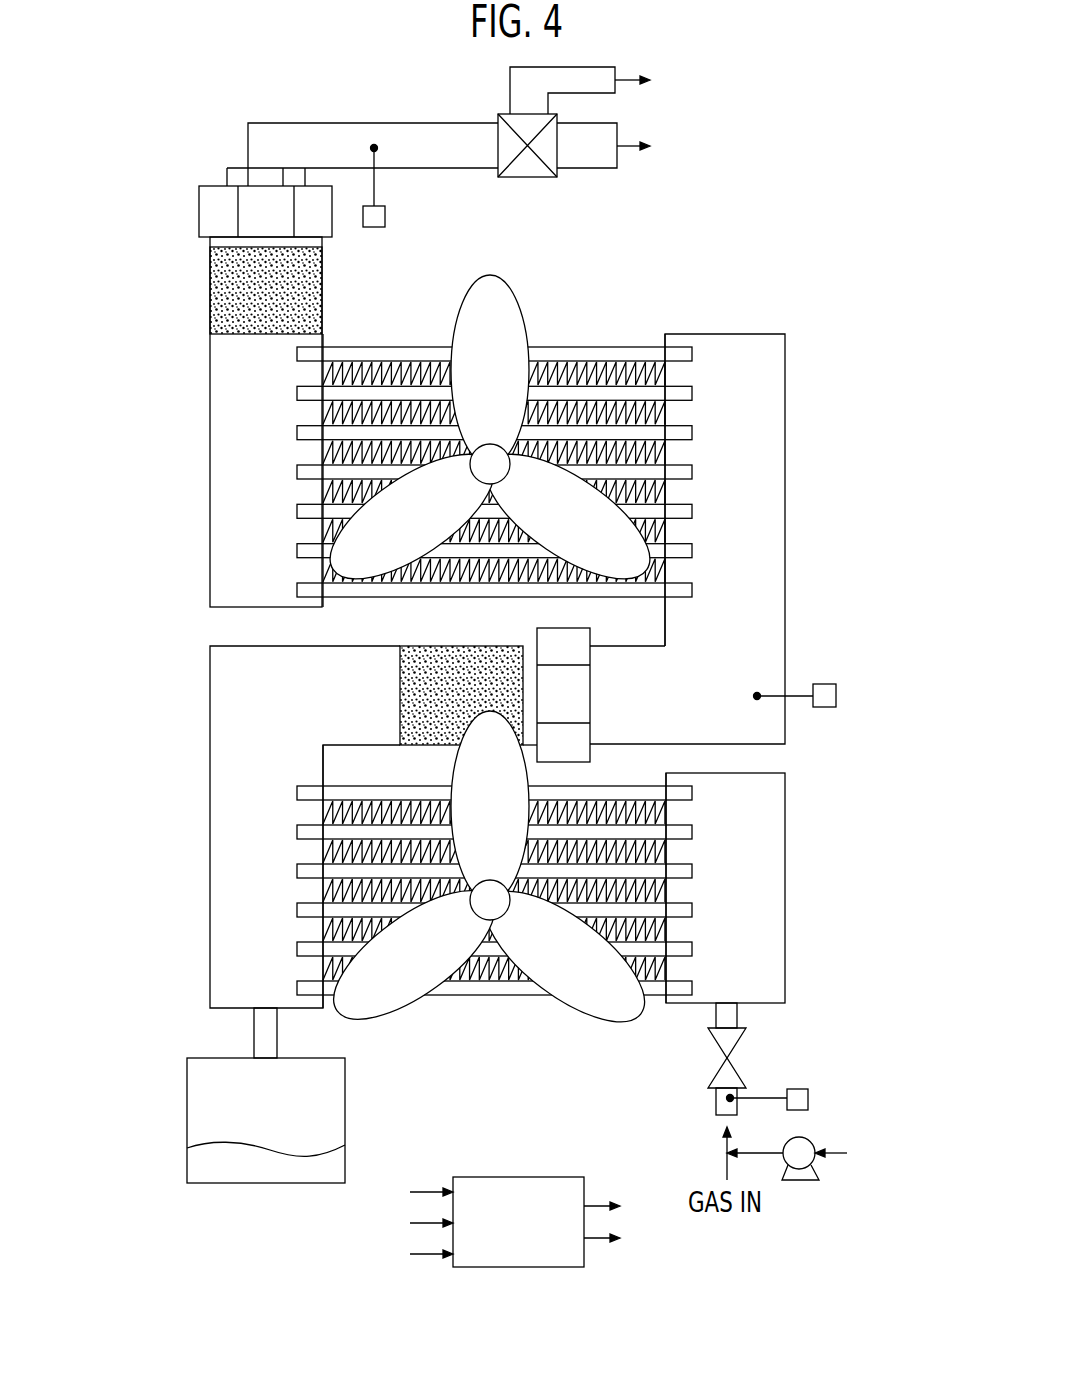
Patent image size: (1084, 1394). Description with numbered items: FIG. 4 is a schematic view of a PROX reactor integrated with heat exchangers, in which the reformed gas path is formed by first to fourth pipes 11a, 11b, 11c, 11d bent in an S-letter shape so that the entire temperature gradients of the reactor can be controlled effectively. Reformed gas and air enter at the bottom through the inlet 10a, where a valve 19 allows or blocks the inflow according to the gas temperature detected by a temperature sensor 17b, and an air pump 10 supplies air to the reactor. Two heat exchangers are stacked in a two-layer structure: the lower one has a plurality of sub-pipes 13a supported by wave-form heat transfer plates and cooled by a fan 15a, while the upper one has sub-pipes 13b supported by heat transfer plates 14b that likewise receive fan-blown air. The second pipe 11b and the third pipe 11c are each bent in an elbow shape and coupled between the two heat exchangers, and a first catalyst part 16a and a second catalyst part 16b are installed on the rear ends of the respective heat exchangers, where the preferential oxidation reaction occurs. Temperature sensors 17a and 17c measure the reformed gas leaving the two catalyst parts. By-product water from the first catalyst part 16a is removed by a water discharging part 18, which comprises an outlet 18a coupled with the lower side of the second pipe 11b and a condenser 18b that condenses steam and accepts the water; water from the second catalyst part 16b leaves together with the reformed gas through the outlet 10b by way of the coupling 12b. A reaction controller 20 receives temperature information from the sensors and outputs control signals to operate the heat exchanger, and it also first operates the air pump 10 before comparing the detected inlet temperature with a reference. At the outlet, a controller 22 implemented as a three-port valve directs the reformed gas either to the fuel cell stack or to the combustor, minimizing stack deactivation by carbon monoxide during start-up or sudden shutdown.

The air pump 10 is at (798, 1182).
The inlet 10a is at (740, 1010).
The outlet 10b is at (313, 130).
The first pipe 11a is at (785, 862).
The second pipe 11b is at (210, 890).
The third pipe 11c is at (785, 385).
The fourth pipe 11d is at (210, 404).
The coupling 12b is at (199, 210).
The sub-pipes 13a is at (453, 995).
The sub-pipes 13b is at (645, 333).
The heat transfer plates 14b is at (567, 364).
The fan 15a is at (590, 1012).
The first catalyst part 16a is at (450, 663).
The second catalyst part 16b is at (215, 288).
The temperature sensor 17a is at (836, 697).
The temperature sensor 17b is at (808, 1100).
The temperature sensor 17c is at (385, 215).
The water discharging part 18 is at (198, 1095).
The outlet 18a is at (254, 1027).
The condenser 18b is at (222, 1120).
The valve 19 is at (742, 1045).
The reaction controller 20 is at (518, 1268).
The controller 22 is at (533, 177).